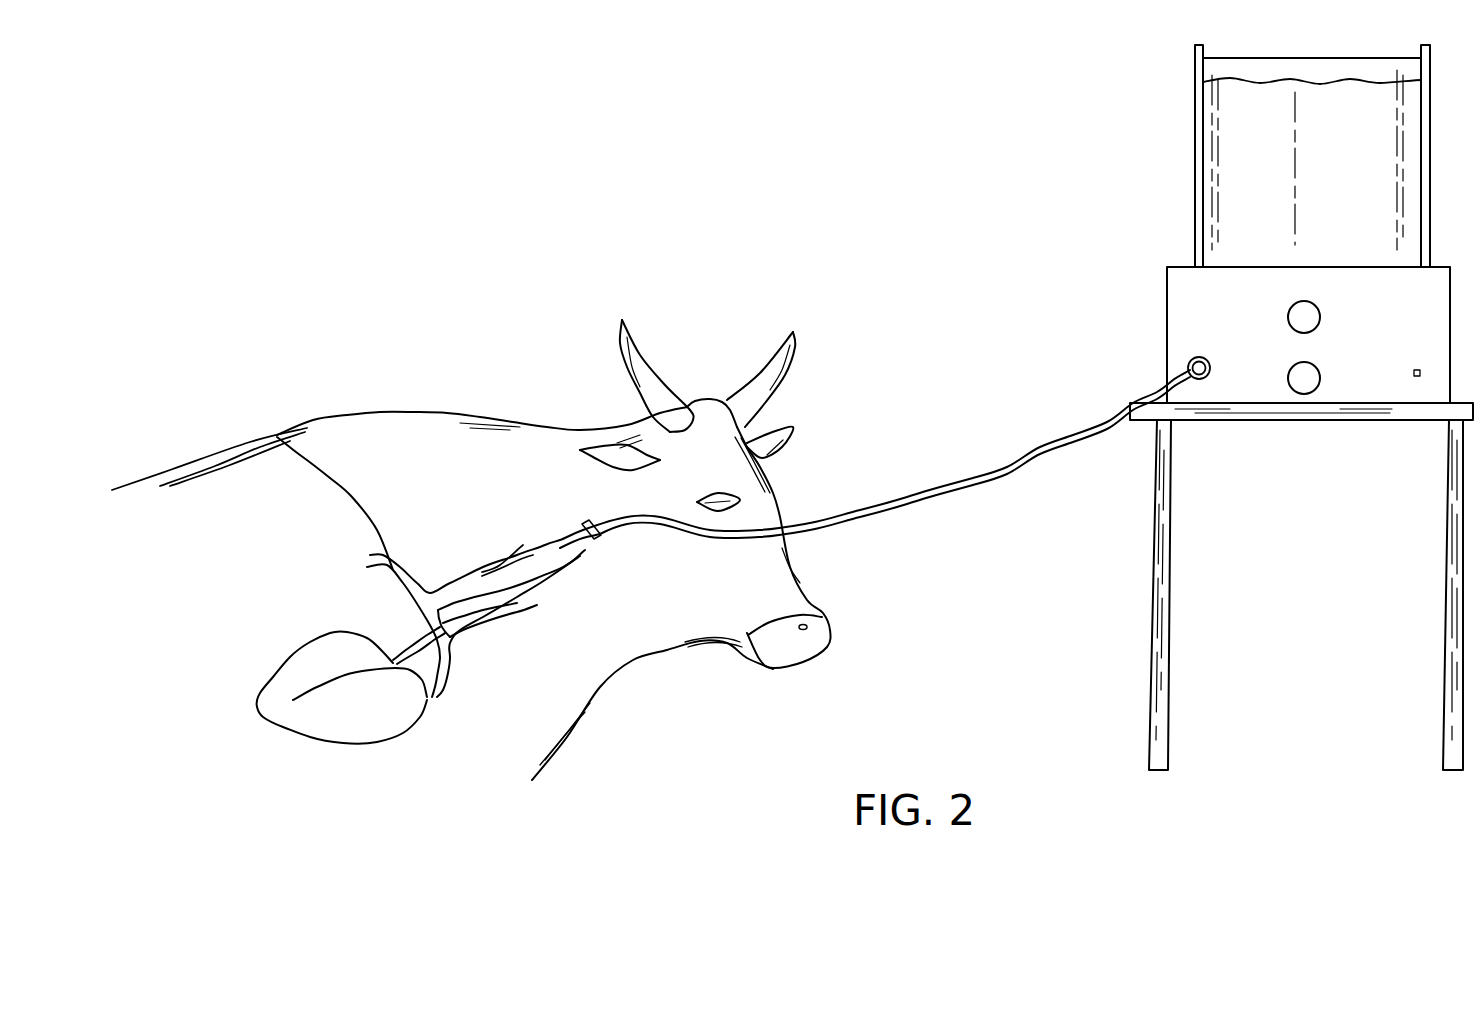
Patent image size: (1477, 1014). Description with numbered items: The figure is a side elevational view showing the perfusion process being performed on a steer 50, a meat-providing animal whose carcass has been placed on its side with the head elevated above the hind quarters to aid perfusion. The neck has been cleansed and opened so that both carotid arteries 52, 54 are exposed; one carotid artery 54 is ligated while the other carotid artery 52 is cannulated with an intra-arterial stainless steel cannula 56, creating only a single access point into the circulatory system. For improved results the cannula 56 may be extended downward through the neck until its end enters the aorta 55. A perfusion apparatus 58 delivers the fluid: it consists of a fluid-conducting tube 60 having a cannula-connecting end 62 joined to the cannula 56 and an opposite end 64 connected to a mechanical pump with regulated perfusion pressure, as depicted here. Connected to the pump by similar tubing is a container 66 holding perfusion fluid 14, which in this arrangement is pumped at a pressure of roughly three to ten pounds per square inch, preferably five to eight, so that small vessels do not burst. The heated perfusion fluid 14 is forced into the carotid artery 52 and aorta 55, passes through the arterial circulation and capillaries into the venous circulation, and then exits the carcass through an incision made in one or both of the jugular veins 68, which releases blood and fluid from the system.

The perfusion fluid 14 is at (1245, 148).
The steer 50 is at (350, 433).
The carotid artery 52 is at (467, 577).
The carotid artery 54 is at (487, 620).
The aorta 55 is at (277, 437).
The intra-arterial stainless steel cannula 56 is at (497, 567).
The perfusion apparatus 58 is at (1170, 288).
The fluid-conducting tube 60 is at (965, 485).
The cannula-connecting end 62 is at (624, 530).
The opposite end 64 is at (1202, 380).
The container 66 is at (1195, 182).
The jugular vein 68 is at (540, 577).